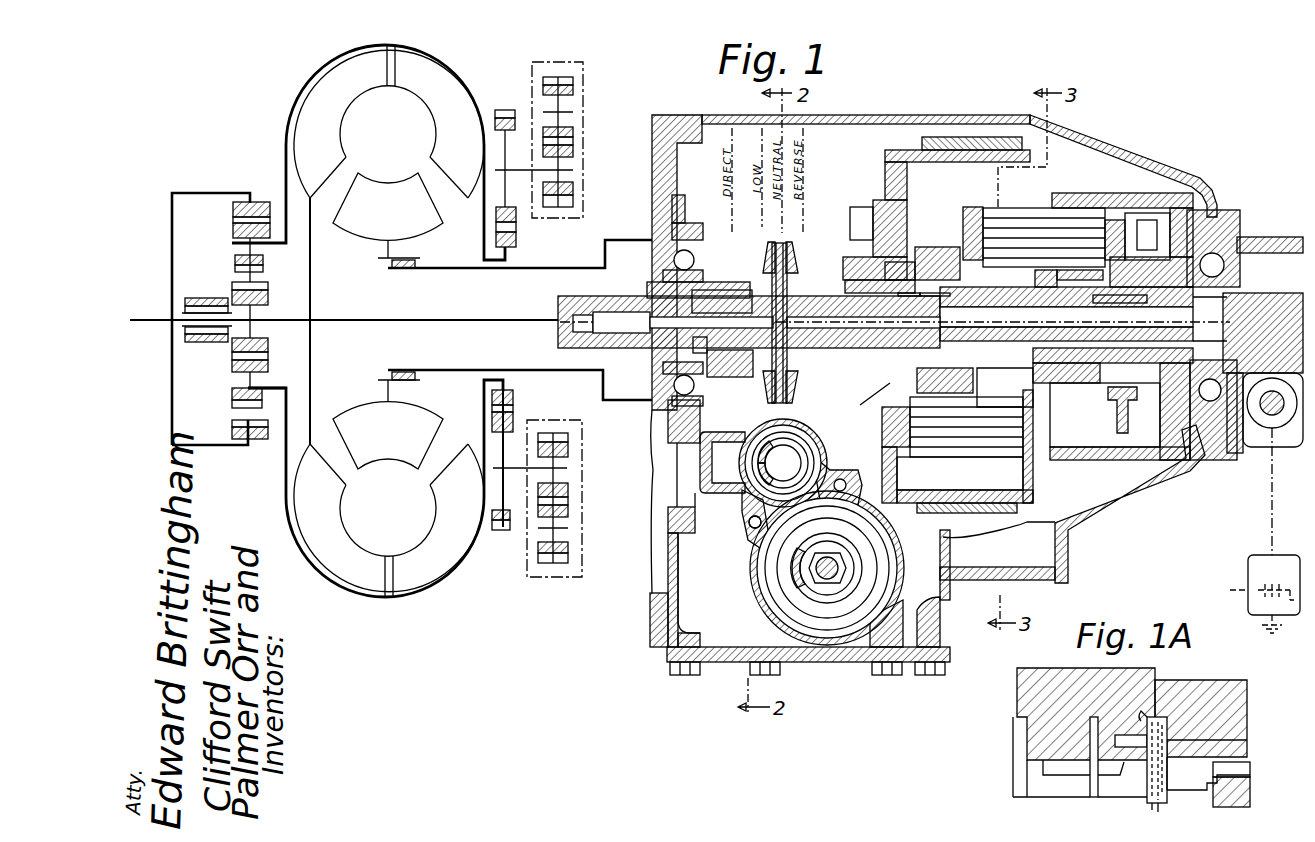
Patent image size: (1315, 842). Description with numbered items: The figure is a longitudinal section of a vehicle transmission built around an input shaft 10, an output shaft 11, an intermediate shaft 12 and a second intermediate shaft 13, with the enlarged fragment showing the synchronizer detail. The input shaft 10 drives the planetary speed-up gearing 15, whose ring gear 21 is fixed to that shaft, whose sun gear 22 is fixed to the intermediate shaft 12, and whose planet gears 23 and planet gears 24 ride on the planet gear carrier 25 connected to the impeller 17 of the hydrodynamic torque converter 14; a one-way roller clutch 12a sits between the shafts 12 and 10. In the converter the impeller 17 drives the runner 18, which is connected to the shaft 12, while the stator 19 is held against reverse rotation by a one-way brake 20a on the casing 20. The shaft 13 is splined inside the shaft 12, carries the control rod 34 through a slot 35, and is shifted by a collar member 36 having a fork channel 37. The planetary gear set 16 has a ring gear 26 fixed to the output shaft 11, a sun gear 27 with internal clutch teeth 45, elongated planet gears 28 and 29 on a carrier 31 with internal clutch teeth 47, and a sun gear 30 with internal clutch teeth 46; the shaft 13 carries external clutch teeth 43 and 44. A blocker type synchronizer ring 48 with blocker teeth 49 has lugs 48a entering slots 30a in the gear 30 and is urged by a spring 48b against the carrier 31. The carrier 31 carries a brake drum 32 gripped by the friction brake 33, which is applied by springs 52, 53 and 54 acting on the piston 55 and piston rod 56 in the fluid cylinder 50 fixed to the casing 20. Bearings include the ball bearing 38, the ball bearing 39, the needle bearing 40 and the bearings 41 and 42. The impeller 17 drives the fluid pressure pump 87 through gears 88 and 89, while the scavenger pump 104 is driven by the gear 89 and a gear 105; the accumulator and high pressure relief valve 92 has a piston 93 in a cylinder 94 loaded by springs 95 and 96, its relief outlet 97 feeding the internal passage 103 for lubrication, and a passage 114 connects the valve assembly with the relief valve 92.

In FIG. 1, the input shaft 10 is at (148, 317).
In FIG. 1, the output shaft 11 is at (1228, 317).
In FIG. 1, the intermediate shaft 12 is at (558, 332).
In FIG. 1, the one-way roller clutch 12a is at (207, 298).
In FIG. 1, the second intermediate shaft 13 is at (994, 360).
In FIG. 1, the hydrodynamic torque converter 14 is at (292, 69).
In FIG. 1, the planetary speed-up gearing 15 is at (205, 232).
In FIG. 1, the planetary gear set 16 is at (1106, 186).
In FIG. 1, the impeller 17 is at (449, 145).
In FIG. 1, the runner 18 is at (369, 121).
In FIG. 1, the stator 19 is at (388, 215).
In FIG. 1, the casing 20 is at (652, 200).
In FIG. 1, the one-way brake 20a is at (395, 268).
In FIG. 1, the ring gear 21 is at (258, 200).
In FIG. 1, the sun gear 22 is at (268, 346).
In FIG. 1, the planet gears 23 is at (264, 270).
In FIG. 1, the planet gears 24 is at (268, 366).
In FIG. 1, the planet gear carrier 25 is at (288, 395).
In FIG. 1, the ring gear 26 is at (1145, 189).
In FIG. 1, the sun gear 27 is at (1089, 393).
In FIG. 1, the elongated planet gears 28 is at (1009, 208).
In FIG. 1, the elongated planet gears 29 is at (964, 454).
In FIG. 1, the sun gear 30 is at (936, 247).
In FIG. 1A, the sun gear 30 is at (1225, 691).
In FIG. 1A, the slots 30a is at (1160, 690).
In FIG. 1, the carrier 31 is at (972, 205).
In FIG. 1, the brake drum 32 is at (896, 147).
In FIG. 1, the friction brake 33 is at (950, 137).
In FIG. 1, the control rod 34 is at (797, 256).
In FIG. 1, the slot 35 is at (734, 279).
In FIG. 1, the collar member 36 is at (798, 244).
In FIG. 1, the channel 37 is at (769, 242).
In FIG. 1, the ball bearing 38 is at (687, 254).
In FIG. 1, the ball bearing 39 is at (1228, 240).
In FIG. 1, the needle bearing 40 is at (1093, 298).
In FIG. 1, the bearing 41 is at (1142, 383).
In FIG. 1, the bearing 42 is at (834, 383).
In FIG. 1, the external clutch teeth 43 is at (950, 296).
In FIG. 1A, the external clutch teeth 43 is at (1243, 781).
In FIG. 1, the external clutch teeth 44 is at (1035, 282).
In FIG. 1, the internal clutch teeth 45 is at (1075, 376).
In FIG. 1, the internal clutch teeth 46 is at (924, 296).
In FIG. 1, the internal clutch teeth 47 is at (874, 293).
In FIG. 1A, the internal clutch teeth 47 is at (1050, 768).
In FIG. 1, the blocker type synchronizer ring 48 is at (865, 402).
In FIG. 1A, the lugs 48a is at (1167, 741).
In FIG. 1A, the spring 48b is at (1160, 803).
In FIG. 1, the blocker teeth 49 is at (902, 293).
In FIG. 1A, the blocker teeth 49 is at (1107, 777).
In FIG. 1, the fluid cylinder 50 is at (758, 600).
In FIG. 1, the spring 52 is at (758, 561).
In FIG. 1, the spring 53 is at (800, 566).
In FIG. 1, the spring 54 is at (807, 582).
In FIG. 1, the piston 55 is at (842, 568).
In FIG. 1, the piston rod 56 is at (834, 567).
In FIG. 1, the fluid pressure pump 87 is at (582, 74).
In FIG. 1, the gear 88 is at (516, 246).
In FIG. 1, the gear 89 is at (504, 108).
In FIG. 1, the accumulator and high pressure relief valve 92 is at (718, 506).
In FIG. 1, the piston 93 is at (783, 463).
In FIG. 1, the cylinder 94 is at (826, 440).
In FIG. 1, the spring 95 is at (755, 460).
In FIG. 1, the spring 96 is at (762, 470).
In FIG. 1, the relief outlet 97 is at (705, 479).
In FIG. 1, the internal passage 103 is at (652, 322).
In FIG. 1, the scavenger pump 104 is at (560, 593).
In FIG. 1, the gear 105 is at (502, 531).
In FIG. 1, the passage 114 is at (750, 526).